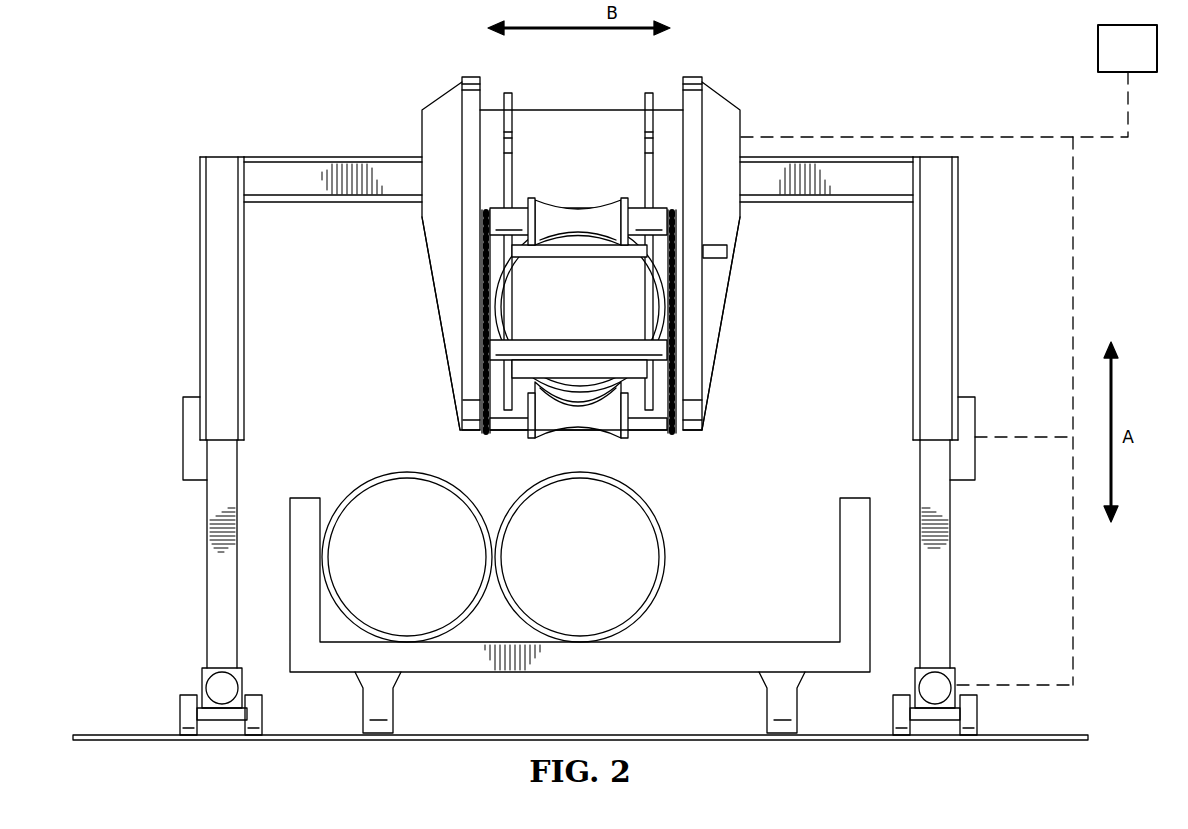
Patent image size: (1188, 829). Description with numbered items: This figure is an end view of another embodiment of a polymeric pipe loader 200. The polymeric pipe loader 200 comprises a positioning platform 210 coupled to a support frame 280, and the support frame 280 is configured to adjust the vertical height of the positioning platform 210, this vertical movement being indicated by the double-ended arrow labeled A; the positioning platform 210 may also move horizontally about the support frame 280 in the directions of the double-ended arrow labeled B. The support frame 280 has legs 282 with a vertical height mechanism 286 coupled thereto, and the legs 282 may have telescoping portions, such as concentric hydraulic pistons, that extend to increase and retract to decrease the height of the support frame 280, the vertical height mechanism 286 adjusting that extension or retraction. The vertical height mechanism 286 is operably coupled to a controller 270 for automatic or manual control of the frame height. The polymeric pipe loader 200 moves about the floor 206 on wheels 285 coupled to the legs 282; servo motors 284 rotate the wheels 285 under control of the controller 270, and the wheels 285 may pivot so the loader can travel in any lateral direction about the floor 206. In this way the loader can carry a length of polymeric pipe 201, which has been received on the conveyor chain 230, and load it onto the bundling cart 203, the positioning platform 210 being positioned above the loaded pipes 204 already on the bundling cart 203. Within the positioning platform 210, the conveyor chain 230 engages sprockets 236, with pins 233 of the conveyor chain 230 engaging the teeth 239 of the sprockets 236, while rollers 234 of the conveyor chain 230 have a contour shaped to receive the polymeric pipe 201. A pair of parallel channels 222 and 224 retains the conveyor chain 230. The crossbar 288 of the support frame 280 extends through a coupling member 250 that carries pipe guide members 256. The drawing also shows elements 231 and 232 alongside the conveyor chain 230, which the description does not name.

The polymeric pipe loader 200 is at (184, 67).
The polymeric pipe 201 is at (527, 388).
The bundling cart 203 is at (577, 673).
The loaded pipes 204 is at (392, 471).
The floor 206 is at (88, 735).
The positioning platform 210 is at (730, 100).
The parallel channel 222 is at (693, 76).
The parallel channel 224 is at (470, 76).
The conveyor chain 230 is at (667, 430).
The left chain 231 is at (487, 272).
The right chain 232 is at (672, 272).
The pins 233 is at (637, 213).
The rollers 234 is at (575, 207).
The sprockets 236 is at (508, 93).
The teeth 239 is at (513, 138).
The coupling member 250 is at (424, 130).
The pipe guide members 256 is at (440, 330).
The controller 270 is at (948, 355).
The support frame 280 is at (200, 176).
The legs 282 is at (222, 342).
The servo motors 284 is at (202, 680).
The wheels 285 is at (180, 713).
The vertical height mechanism 286 is at (183, 463).
The crossbar 288 is at (292, 157).